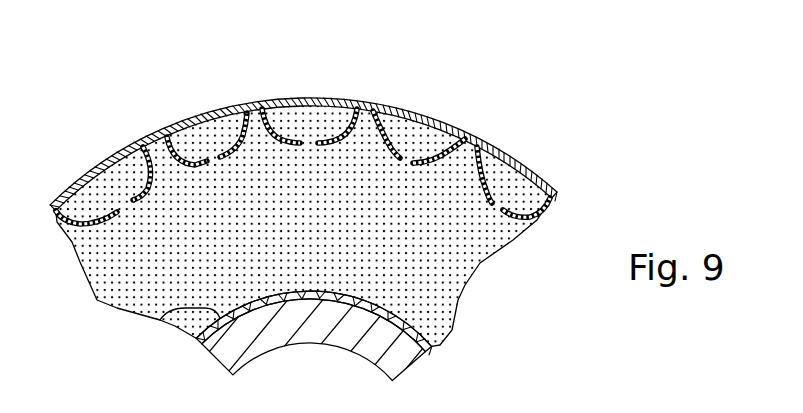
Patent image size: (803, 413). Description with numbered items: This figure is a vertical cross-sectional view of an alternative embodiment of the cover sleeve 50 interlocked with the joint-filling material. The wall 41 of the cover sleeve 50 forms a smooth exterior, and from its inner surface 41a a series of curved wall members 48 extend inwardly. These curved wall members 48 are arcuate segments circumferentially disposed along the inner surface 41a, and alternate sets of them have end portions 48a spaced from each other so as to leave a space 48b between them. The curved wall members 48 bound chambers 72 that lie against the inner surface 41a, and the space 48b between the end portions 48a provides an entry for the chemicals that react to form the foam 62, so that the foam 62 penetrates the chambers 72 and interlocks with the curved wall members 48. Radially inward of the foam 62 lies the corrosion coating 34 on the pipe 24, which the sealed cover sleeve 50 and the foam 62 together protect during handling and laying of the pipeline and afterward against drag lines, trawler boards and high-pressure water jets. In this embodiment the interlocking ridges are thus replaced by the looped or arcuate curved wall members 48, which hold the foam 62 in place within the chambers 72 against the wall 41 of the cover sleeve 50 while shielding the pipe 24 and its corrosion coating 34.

The cover sleeve 50 is at (210, 82).
The wall 41 is at (196, 115).
The inner surface 41a is at (173, 143).
The chamber 72 is at (113, 183).
The curved wall member 48 is at (383, 140).
The end portion 48a is at (297, 141).
The space 48b is at (307, 142).
The foam 62 is at (447, 262).
The corrosion coating 34 is at (160, 322).
The pipe 24 is at (403, 357).